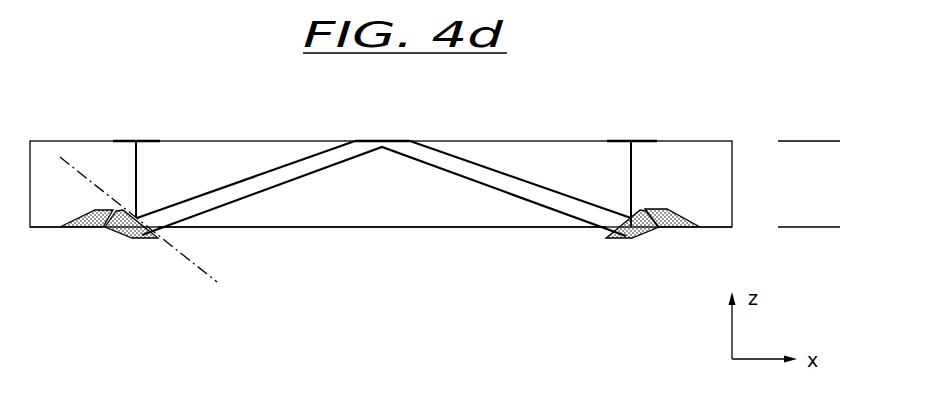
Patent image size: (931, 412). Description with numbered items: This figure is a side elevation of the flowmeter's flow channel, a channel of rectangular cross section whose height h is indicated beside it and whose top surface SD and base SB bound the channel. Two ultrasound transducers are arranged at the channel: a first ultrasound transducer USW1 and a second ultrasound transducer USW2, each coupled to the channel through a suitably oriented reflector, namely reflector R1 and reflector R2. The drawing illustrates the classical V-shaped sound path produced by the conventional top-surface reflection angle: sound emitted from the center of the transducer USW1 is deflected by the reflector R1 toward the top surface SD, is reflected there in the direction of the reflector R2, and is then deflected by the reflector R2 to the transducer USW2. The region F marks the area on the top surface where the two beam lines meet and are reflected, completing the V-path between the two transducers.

The ultrasound transducer USW1 is at (136, 140).
The ultrasound transducer USW2 is at (631, 140).
The top surface SD is at (520, 140).
The base SB is at (432, 228).
The reflector R1 is at (122, 232).
The reflector R2 is at (643, 230).
The focal region of ultrasonic beam F is at (438, 182).
The height h is at (808, 77).